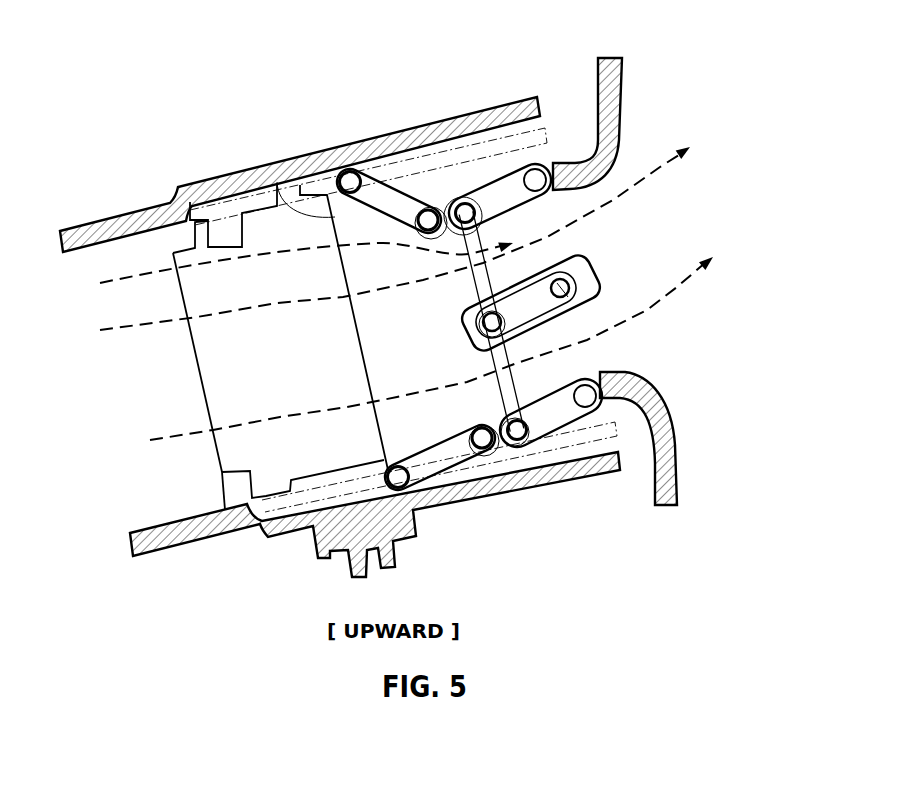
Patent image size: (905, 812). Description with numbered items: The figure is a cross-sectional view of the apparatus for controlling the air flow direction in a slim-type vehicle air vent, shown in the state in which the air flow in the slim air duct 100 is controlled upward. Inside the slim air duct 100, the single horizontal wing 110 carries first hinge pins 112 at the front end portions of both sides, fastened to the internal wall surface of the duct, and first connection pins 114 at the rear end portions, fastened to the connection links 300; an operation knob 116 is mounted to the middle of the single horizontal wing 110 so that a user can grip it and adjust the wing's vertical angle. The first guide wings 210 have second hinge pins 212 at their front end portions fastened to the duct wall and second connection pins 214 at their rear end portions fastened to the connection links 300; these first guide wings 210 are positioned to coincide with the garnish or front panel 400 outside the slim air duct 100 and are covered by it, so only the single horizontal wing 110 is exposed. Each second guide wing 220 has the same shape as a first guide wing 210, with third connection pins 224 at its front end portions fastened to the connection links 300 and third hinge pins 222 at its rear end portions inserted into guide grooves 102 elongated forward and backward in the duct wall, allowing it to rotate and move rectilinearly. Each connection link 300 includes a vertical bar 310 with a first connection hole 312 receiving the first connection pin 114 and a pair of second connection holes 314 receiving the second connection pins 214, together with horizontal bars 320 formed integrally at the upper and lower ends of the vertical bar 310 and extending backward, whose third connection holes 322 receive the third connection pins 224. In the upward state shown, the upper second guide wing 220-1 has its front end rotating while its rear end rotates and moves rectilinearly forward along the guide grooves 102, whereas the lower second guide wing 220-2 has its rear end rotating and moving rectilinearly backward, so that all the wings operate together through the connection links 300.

The slim air duct 100 is at (424, 303).
The guide grooves 102 is at (456, 150).
The single horizontal wing 110 is at (580, 302).
The first hinge pins 112 is at (570, 312).
The first connection pins 114 is at (512, 315).
The operation knob 116 is at (592, 260).
The first guide wings 210 is at (560, 288).
The second hinge pins 212 is at (546, 196).
The second connection pins 214 is at (468, 198).
The second guide wing 220 is at (389, 126).
The upper second guide wing 220-1 is at (276, 212).
The lower second guide wing 220-2 is at (380, 452).
The third hinge pins 222 is at (301, 150).
The third connection pins 224 is at (420, 203).
The connection links 300 is at (458, 287).
The vertical bar 310 is at (572, 453).
The first connection hole 312 is at (482, 342).
The second connection holes 314 is at (521, 447).
The horizontal bars 320 is at (450, 500).
The third connection holes 322 is at (466, 432).
The garnish or front panel 400 is at (622, 98).